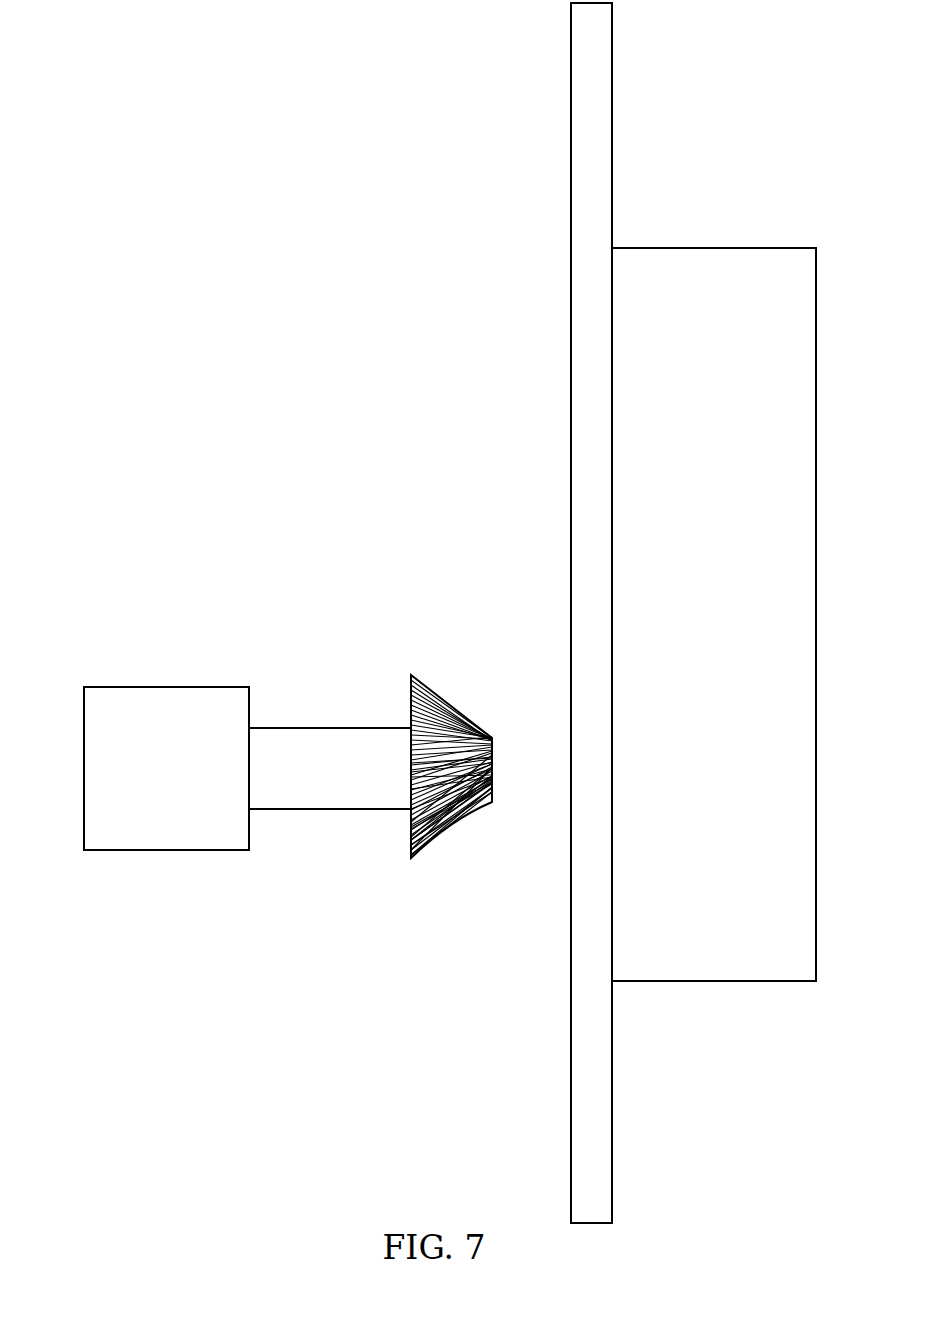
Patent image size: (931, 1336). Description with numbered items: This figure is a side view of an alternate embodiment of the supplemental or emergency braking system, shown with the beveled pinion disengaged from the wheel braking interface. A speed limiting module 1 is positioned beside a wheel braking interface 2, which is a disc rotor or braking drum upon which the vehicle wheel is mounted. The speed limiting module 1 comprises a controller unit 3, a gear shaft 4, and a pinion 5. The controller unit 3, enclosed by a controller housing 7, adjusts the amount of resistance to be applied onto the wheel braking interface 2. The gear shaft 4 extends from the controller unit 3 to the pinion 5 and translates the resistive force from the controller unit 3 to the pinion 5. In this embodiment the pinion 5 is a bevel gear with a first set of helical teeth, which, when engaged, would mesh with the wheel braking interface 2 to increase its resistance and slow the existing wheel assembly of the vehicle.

The speed limiting module 1 is at (150, 448).
The wheel braking interface 2 is at (688, 267).
The controller unit 3 is at (156, 656).
The gear shaft 4 is at (322, 752).
The pinion 5 is at (430, 853).
The controller housing 7 is at (152, 850).